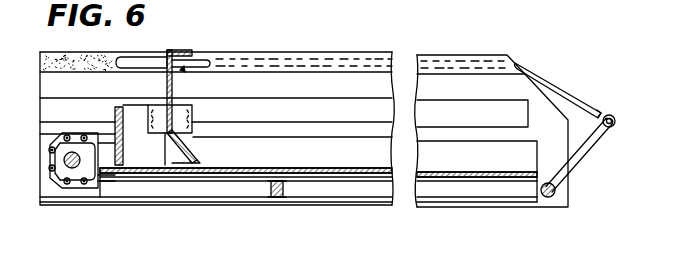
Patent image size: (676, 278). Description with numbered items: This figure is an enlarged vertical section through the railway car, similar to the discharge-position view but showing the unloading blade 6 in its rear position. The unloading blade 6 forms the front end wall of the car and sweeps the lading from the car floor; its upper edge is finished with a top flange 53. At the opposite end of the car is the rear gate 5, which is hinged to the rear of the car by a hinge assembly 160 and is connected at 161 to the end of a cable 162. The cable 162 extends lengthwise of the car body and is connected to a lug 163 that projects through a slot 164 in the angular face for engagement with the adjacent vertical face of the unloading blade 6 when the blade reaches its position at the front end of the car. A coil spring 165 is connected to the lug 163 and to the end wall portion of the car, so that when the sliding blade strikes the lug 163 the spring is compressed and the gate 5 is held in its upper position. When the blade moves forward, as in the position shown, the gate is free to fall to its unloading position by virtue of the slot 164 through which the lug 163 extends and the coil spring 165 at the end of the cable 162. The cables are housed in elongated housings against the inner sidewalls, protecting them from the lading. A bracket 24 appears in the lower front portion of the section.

The unloading blade 6 is at (203, 52).
The coil spring 165 is at (82, 61).
The slot 164 is at (116, 63).
The lug 163 is at (160, 61).
The top flange 53 is at (186, 50).
The bracket 24 is at (79, 166).
The cable 162 is at (571, 98).
The connection 161 is at (609, 115).
The rear gate 5 is at (589, 150).
The hinge assembly 160 is at (549, 198).